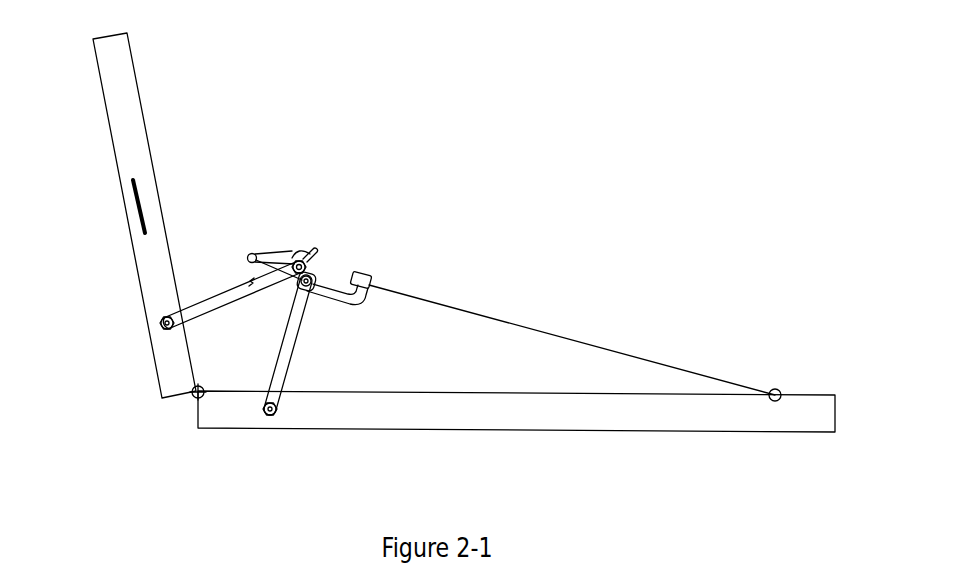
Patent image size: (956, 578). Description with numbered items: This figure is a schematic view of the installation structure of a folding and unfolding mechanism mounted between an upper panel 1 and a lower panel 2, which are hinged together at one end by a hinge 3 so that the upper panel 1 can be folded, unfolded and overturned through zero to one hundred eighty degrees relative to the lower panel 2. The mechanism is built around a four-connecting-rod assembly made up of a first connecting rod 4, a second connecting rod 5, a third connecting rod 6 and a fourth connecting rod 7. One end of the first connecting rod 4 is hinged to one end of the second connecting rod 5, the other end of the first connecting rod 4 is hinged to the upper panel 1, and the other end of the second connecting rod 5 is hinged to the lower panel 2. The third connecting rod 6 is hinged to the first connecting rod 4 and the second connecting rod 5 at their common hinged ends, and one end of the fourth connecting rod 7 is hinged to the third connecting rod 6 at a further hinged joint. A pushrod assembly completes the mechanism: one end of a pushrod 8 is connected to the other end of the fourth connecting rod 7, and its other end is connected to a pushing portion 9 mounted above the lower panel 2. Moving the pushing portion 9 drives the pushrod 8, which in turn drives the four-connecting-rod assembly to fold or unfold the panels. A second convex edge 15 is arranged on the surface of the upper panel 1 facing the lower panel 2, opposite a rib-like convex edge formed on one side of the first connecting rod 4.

The upper panel 1 is at (132, 140).
The lower panel 2 is at (473, 417).
The hinge 3 is at (197, 393).
The first connecting rod 4 is at (231, 288).
The second connecting rod 5 is at (289, 340).
The third connecting rod 6 is at (266, 256).
The fourth connecting rod 7 is at (363, 275).
The pushrod 8 is at (478, 313).
The pushing portion 9 is at (779, 391).
The second convex edge 15 is at (142, 215).